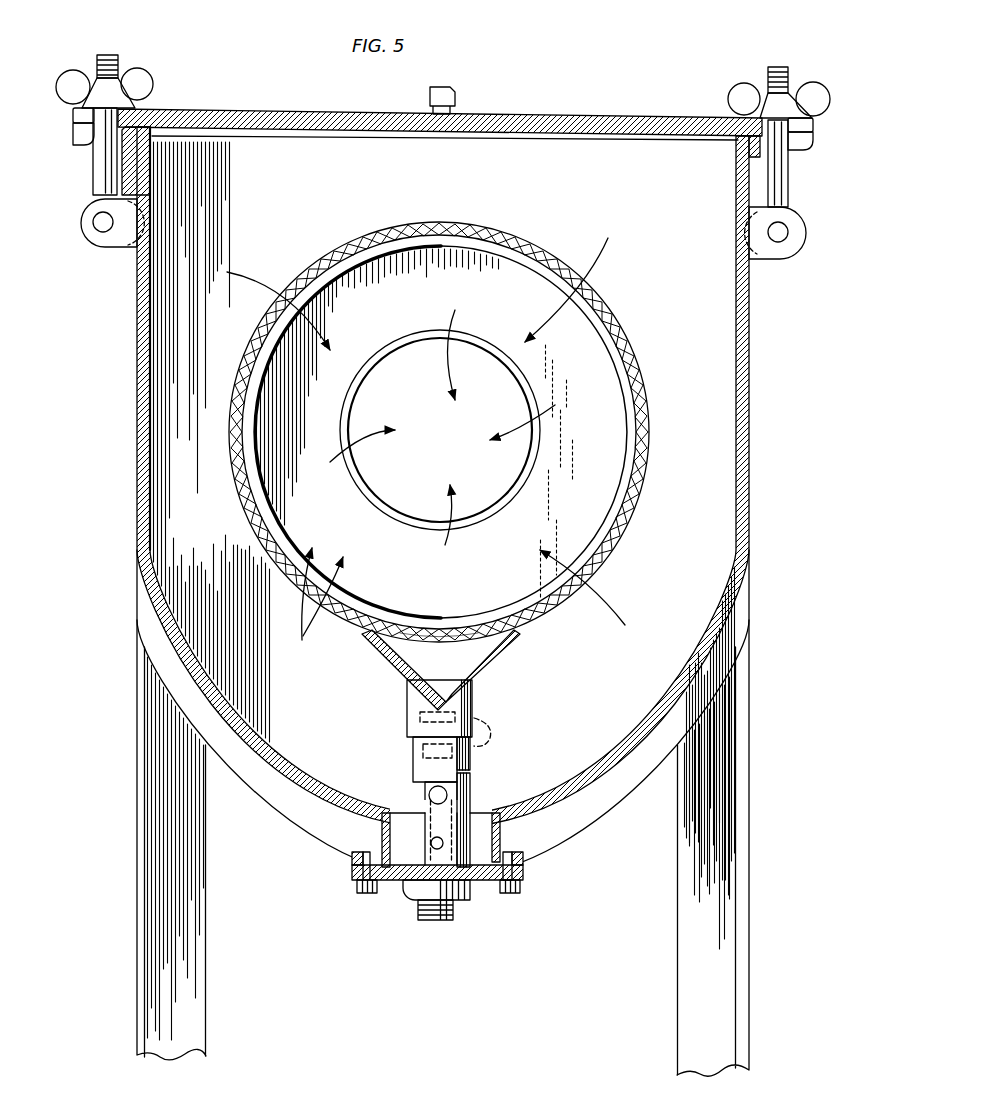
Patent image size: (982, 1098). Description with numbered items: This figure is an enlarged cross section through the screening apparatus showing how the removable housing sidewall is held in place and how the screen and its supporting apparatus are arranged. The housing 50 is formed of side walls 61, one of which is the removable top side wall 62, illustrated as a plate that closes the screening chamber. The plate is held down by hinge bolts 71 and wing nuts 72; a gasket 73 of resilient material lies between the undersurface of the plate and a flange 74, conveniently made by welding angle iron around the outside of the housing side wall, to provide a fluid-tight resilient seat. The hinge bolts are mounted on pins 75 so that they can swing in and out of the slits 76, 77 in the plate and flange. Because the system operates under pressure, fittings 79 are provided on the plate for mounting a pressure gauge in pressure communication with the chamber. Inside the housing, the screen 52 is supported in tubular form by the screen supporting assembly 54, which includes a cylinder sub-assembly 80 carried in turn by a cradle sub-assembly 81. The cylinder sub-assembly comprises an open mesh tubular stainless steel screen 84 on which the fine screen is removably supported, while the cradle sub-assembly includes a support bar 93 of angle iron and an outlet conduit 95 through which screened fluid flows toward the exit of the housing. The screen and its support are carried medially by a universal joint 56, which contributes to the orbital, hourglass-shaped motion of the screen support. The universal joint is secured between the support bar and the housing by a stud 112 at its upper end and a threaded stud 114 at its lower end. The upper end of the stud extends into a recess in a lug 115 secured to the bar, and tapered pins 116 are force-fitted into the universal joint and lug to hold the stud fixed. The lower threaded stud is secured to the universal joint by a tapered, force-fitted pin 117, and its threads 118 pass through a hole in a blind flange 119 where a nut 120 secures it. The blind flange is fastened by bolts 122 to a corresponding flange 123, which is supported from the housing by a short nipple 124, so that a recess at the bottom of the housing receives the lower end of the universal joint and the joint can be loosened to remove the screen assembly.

The housing 50 is at (435, 601).
The screen 52 is at (481, 226).
The screen supporting assembly 54 is at (362, 638).
The universal joint 56 is at (412, 778).
The side walls 61 is at (135, 421).
The removable top side wall 62 is at (645, 117).
The hinge bolts 71 is at (108, 56).
The wing nuts 72 is at (150, 77).
The gasket 73 is at (813, 134).
The flange 74 is at (803, 152).
The pins 75 is at (789, 236).
The slit 76 is at (78, 116).
The slit 77 is at (83, 144).
The fittings 79 is at (457, 98).
The cylinder sub-assembly 80 is at (311, 594).
The cradle sub-assembly 81 is at (391, 666).
The tubular stainless steel screen 84 is at (614, 330).
The support bar 93 is at (468, 666).
The outlet conduit 95 is at (355, 387).
The stud 112 is at (410, 730).
The threaded stud 114 is at (471, 813).
The lug 115 is at (472, 701).
The tapered pins 116 is at (494, 732).
The pin 117 is at (431, 840).
The threads 118 is at (455, 916).
The blind flange 119 is at (388, 885).
The nut 120 is at (470, 896).
The bolts 122 is at (521, 891).
The flange 123 is at (525, 870).
The nipple 124 is at (500, 839).